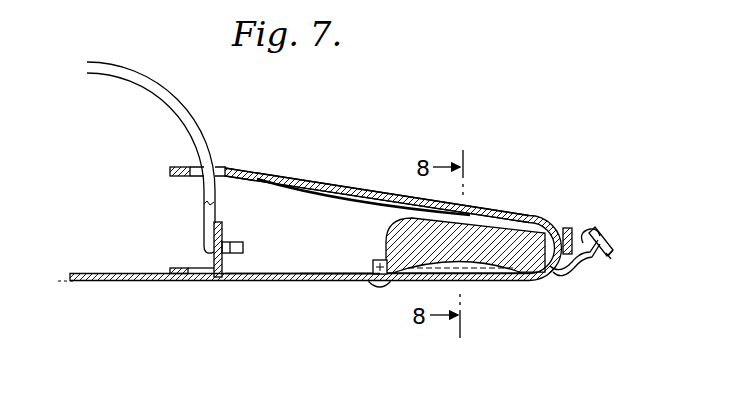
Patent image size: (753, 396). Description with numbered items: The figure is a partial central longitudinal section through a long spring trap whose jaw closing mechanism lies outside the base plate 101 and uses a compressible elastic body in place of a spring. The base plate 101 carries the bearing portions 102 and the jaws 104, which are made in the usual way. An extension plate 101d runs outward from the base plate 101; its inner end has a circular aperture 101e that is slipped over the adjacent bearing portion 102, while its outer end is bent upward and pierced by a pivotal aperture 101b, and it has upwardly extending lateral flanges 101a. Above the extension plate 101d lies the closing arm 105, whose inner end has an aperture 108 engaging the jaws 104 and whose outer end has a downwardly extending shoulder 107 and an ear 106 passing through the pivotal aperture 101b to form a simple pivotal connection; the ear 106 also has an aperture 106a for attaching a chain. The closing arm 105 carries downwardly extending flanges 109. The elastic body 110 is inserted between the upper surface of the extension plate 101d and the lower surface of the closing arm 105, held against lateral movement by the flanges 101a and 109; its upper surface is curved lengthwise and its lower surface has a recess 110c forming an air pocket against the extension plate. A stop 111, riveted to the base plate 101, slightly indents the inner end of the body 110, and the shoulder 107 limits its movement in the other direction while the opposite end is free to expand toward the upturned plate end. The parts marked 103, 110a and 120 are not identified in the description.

The base plate 101 is at (133, 282).
The lateral flanges 101a is at (332, 254).
The pivotal aperture 101b is at (620, 303).
The extension plate 101d is at (315, 313).
The aperture 101e is at (223, 282).
The bearing portions 102 is at (224, 233).
The fastener 103 is at (286, 251).
The jaws 104 is at (230, 124).
The closing arm 105 is at (346, 163).
The ear 106 is at (606, 231).
The aperture 106a is at (676, 253).
The shoulder 107 is at (591, 208).
The aperture 108 is at (274, 161).
The flanges 109 is at (344, 221).
The elastic body 110 is at (483, 228).
The block bottom 110a is at (391, 286).
The recess 110c is at (480, 270).
The stop 111 is at (366, 286).
The hook fitting 120 is at (597, 232).